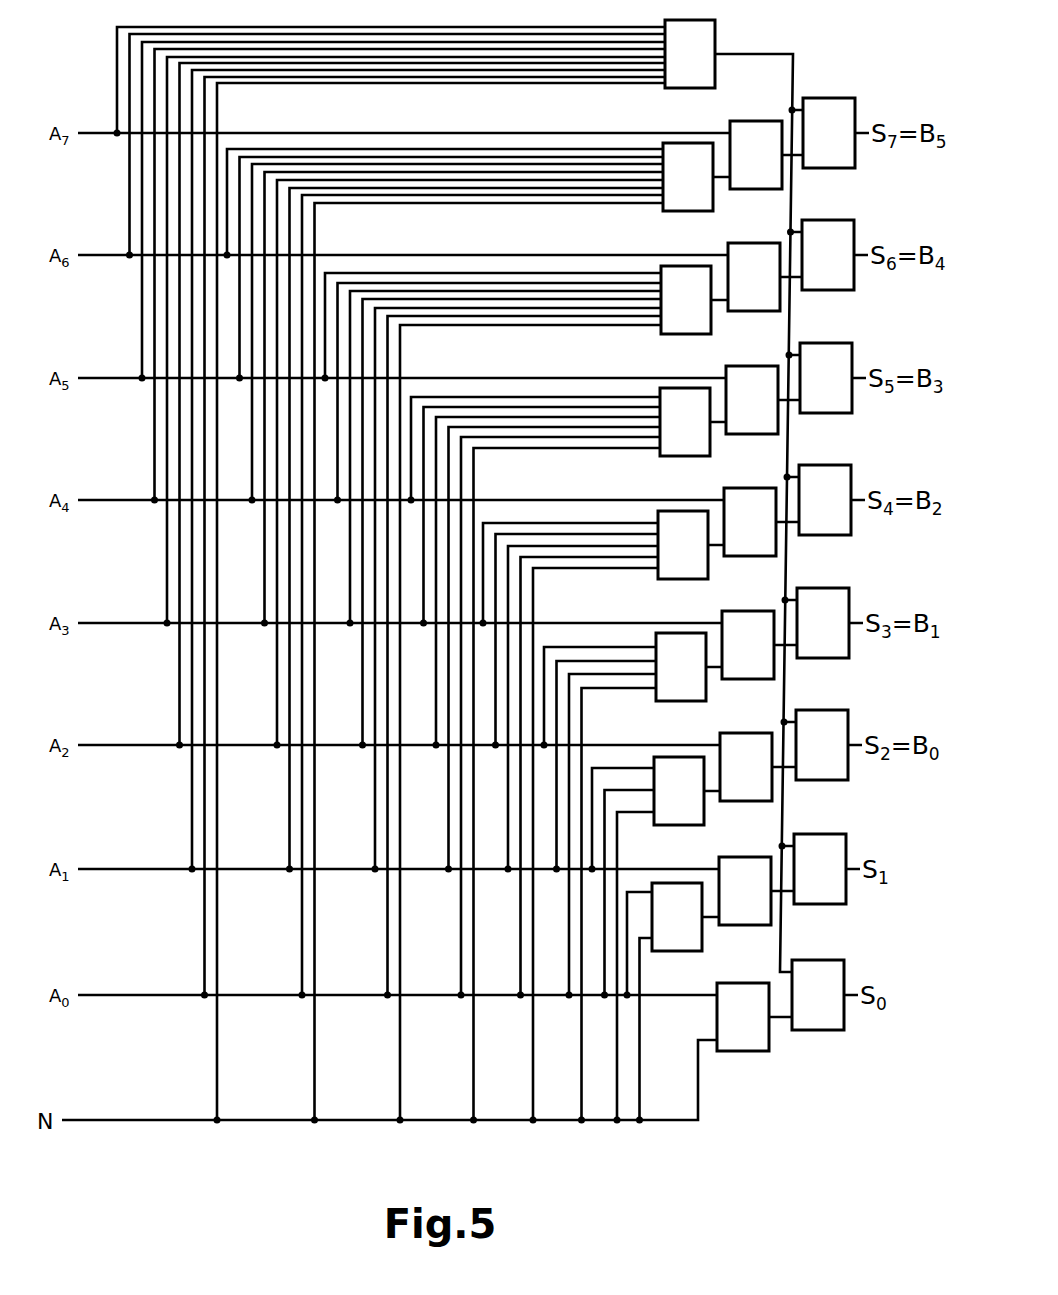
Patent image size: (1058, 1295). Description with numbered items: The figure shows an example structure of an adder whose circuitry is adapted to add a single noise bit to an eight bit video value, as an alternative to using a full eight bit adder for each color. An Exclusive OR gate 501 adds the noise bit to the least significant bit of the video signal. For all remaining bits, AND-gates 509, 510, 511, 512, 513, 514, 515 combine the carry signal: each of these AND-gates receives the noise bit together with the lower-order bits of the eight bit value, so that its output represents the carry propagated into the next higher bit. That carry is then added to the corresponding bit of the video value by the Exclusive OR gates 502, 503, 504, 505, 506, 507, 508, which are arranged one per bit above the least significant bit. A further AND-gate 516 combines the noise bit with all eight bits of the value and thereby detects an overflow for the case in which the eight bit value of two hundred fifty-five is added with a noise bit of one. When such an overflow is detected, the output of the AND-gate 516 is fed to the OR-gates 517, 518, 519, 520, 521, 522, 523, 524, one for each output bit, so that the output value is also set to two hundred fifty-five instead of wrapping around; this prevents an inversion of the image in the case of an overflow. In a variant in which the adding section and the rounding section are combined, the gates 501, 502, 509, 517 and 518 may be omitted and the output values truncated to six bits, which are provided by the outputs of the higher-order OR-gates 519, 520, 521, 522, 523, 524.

The Exclusive OR gate 501 is at (744, 1051).
The Exclusive OR gate 502 is at (746, 925).
The Exclusive OR gate 503 is at (747, 801).
The Exclusive OR gate 504 is at (749, 679).
The Exclusive OR gate 505 is at (751, 556).
The Exclusive OR gate 506 is at (753, 434).
The Exclusive OR gate 507 is at (755, 311).
The Exclusive OR gate 508 is at (757, 189).
The AND-gate 509 is at (680, 951).
The AND-gate 510 is at (682, 825).
The AND-gate 511 is at (684, 701).
The AND-gate 512 is at (686, 579).
The AND-gate 513 is at (688, 456).
The AND-gate 514 is at (689, 334).
The AND-gate 515 is at (691, 211).
The AND-gate 516 is at (693, 88).
The OR-gate 517 is at (820, 1030).
The OR-gate 518 is at (822, 904).
The OR-gate 519 is at (824, 780).
The OR-gate 520 is at (825, 658).
The OR-gate 521 is at (827, 535).
The OR-gate 522 is at (828, 413).
The OR-gate 523 is at (830, 290).
The OR-gate 524 is at (831, 168).